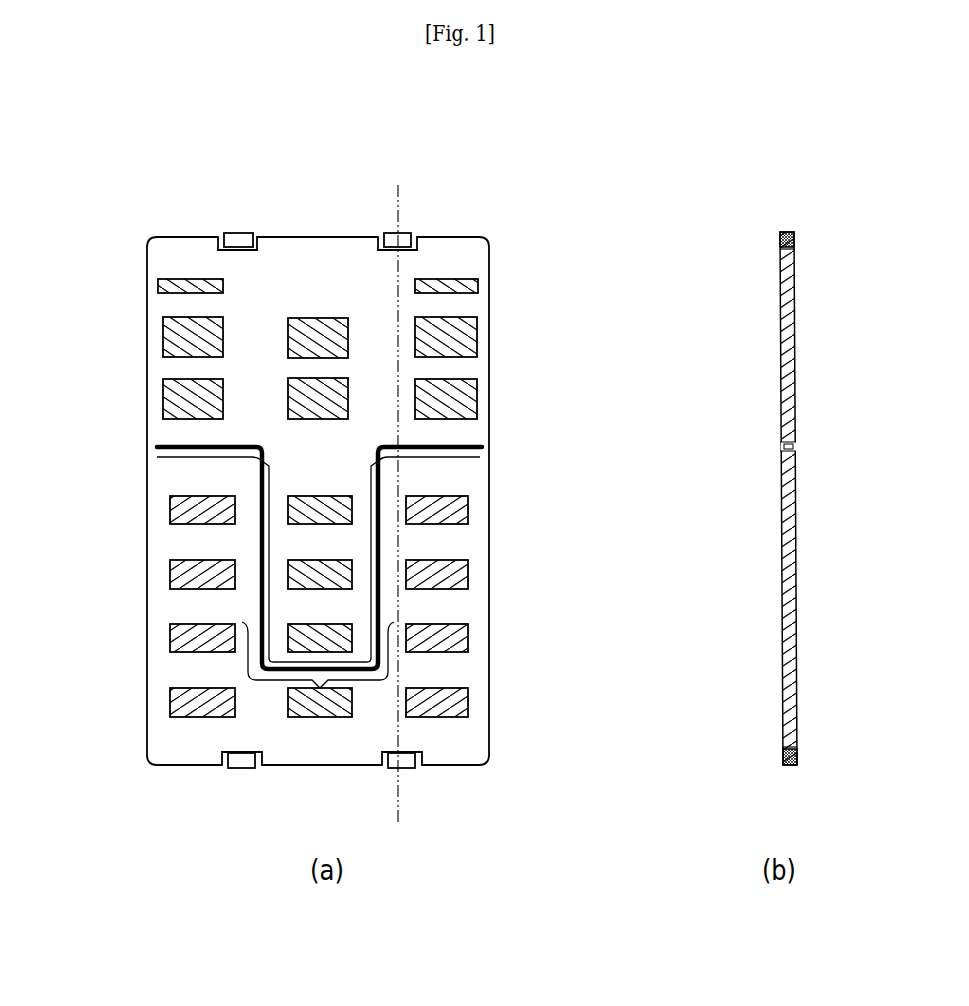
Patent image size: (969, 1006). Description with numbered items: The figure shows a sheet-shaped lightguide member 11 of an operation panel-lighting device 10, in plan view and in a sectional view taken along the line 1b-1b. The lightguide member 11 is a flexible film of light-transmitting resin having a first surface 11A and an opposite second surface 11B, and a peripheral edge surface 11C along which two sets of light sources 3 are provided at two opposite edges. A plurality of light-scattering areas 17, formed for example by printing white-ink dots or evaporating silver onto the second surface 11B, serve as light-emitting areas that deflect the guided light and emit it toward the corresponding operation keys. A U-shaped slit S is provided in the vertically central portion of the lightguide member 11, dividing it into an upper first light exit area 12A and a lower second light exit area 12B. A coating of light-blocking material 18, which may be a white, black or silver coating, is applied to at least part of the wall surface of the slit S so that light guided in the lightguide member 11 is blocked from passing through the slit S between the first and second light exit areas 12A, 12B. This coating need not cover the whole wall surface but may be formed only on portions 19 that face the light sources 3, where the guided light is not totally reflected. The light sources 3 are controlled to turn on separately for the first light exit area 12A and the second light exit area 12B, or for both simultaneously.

The light sources 3 is at (239, 234).
The operation panel-lighting device 10 is at (540, 265).
The sheet-shaped lightguide member 11 is at (494, 411).
The first surface 11A is at (156, 262).
The second surface 11B is at (795, 302).
The peripheral edge surface 11C is at (160, 238).
The first light exit area 12A is at (140, 283).
The second light exit area 12B is at (140, 463).
The light-scattering areas 17 is at (317, 330).
The light-blocking material 18 is at (797, 445).
The portions facing the light sources 19 is at (250, 458).
The U-shaped slit S is at (483, 442).
The section line 1b- 1b is at (445, 192).